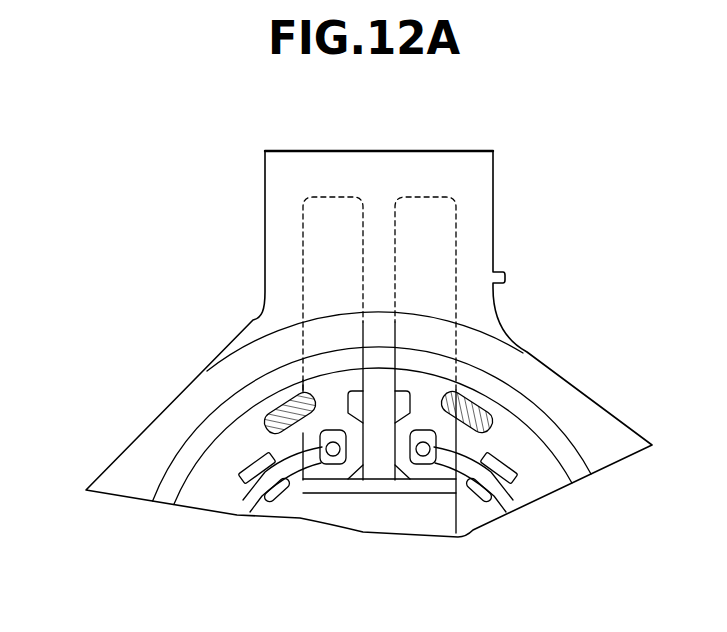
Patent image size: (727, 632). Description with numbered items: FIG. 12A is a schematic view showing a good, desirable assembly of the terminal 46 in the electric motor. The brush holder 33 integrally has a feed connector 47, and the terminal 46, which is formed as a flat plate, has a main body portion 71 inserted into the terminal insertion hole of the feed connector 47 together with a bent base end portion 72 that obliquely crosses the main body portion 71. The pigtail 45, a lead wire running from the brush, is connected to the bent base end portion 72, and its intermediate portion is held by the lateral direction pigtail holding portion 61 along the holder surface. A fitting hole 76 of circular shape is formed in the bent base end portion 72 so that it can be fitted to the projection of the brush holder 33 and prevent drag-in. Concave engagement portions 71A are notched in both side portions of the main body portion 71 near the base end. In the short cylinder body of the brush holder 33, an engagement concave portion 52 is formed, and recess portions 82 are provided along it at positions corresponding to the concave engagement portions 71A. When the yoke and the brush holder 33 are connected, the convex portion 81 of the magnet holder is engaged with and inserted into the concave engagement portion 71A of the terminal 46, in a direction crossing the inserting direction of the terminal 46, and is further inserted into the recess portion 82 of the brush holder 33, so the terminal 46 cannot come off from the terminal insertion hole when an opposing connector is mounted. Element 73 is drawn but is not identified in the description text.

The brush holder 33 is at (128, 426).
The pigtail 45 is at (243, 507).
The terminal 46 is at (325, 197).
The feed connector 47 is at (490, 168).
The engagement concave portion 52 is at (165, 482).
The lateral direction pigtail holding portion 61 is at (247, 463).
The main body portion 71 is at (300, 229).
The concave engagement portion 71A is at (306, 392).
The bent base end portion 72 is at (355, 458).
The base plate 73 is at (432, 485).
The fitting hole 76 is at (327, 437).
The convex portion 81 is at (300, 416).
The recess portion 82 is at (277, 408).